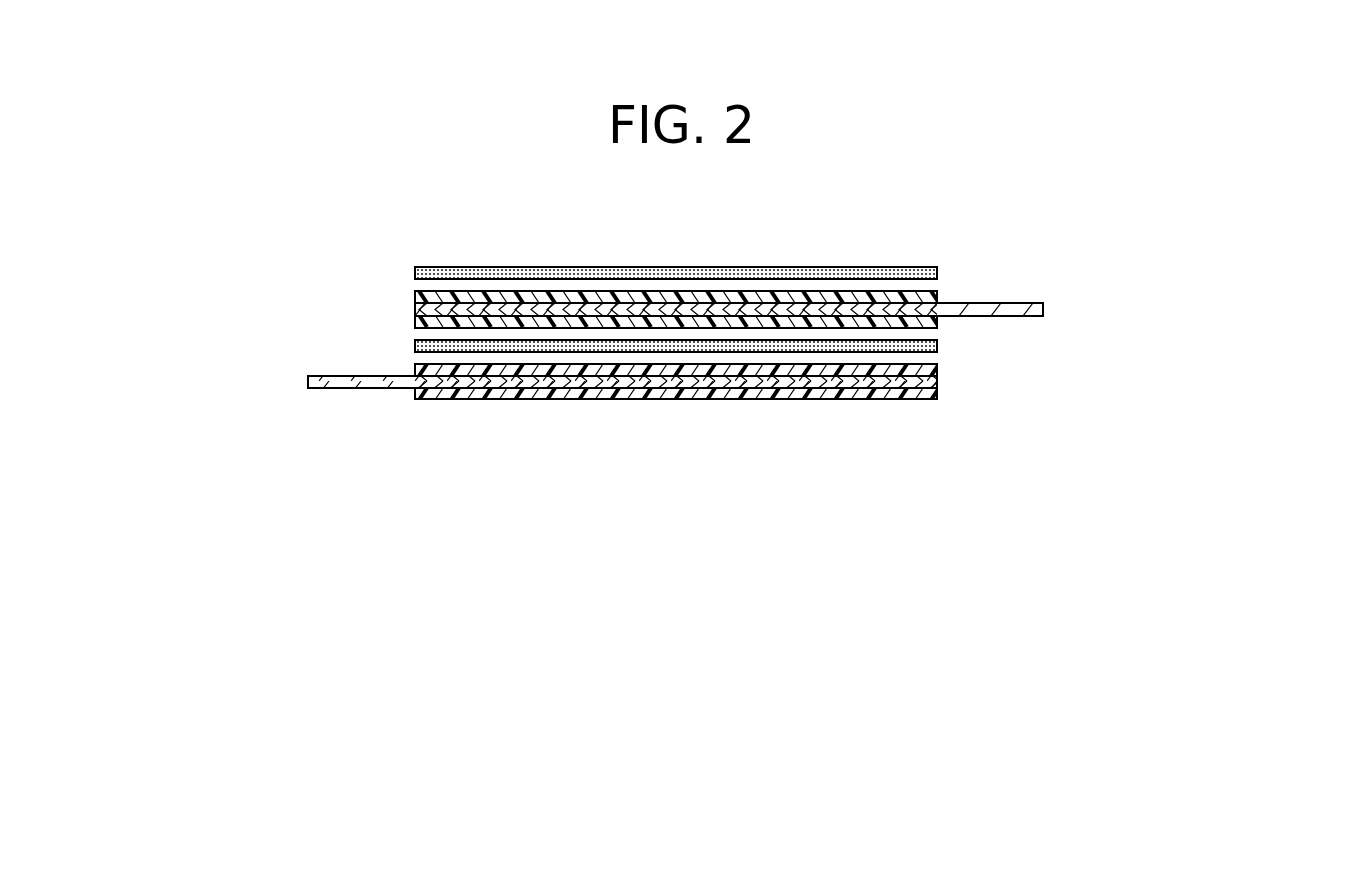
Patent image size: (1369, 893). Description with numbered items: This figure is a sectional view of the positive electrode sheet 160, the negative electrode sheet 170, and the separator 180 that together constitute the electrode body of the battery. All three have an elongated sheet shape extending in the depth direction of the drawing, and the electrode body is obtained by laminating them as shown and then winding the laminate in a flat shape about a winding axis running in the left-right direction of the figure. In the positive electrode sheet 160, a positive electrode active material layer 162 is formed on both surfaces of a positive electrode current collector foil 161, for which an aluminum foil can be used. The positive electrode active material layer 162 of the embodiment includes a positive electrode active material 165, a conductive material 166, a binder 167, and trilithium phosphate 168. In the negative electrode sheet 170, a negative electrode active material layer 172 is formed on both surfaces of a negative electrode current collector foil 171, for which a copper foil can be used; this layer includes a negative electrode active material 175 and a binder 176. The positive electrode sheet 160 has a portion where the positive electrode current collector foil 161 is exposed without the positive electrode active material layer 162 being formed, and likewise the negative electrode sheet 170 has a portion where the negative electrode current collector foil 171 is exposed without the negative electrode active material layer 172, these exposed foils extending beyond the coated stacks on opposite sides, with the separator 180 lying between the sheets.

The positive electrode sheet 160 is at (1257, 213).
The positive electrode current collector foil 161 is at (1043, 310).
The positive electrode active material layer 162 is at (937, 297).
The positive electrode active material 165 is at (827, 324).
The conductive material 166 is at (827, 324).
The binder 167 is at (827, 324).
The trilithium phosphate 168 is at (827, 324).
The negative electrode sheet 170 is at (169, 292).
The negative electrode current collector foil 171 is at (308, 383).
The negative electrode active material layer 172 is at (415, 398).
The negative electrode active material 175 is at (558, 395).
The binder 176 is at (586, 395).
The separator 180 is at (415, 345).